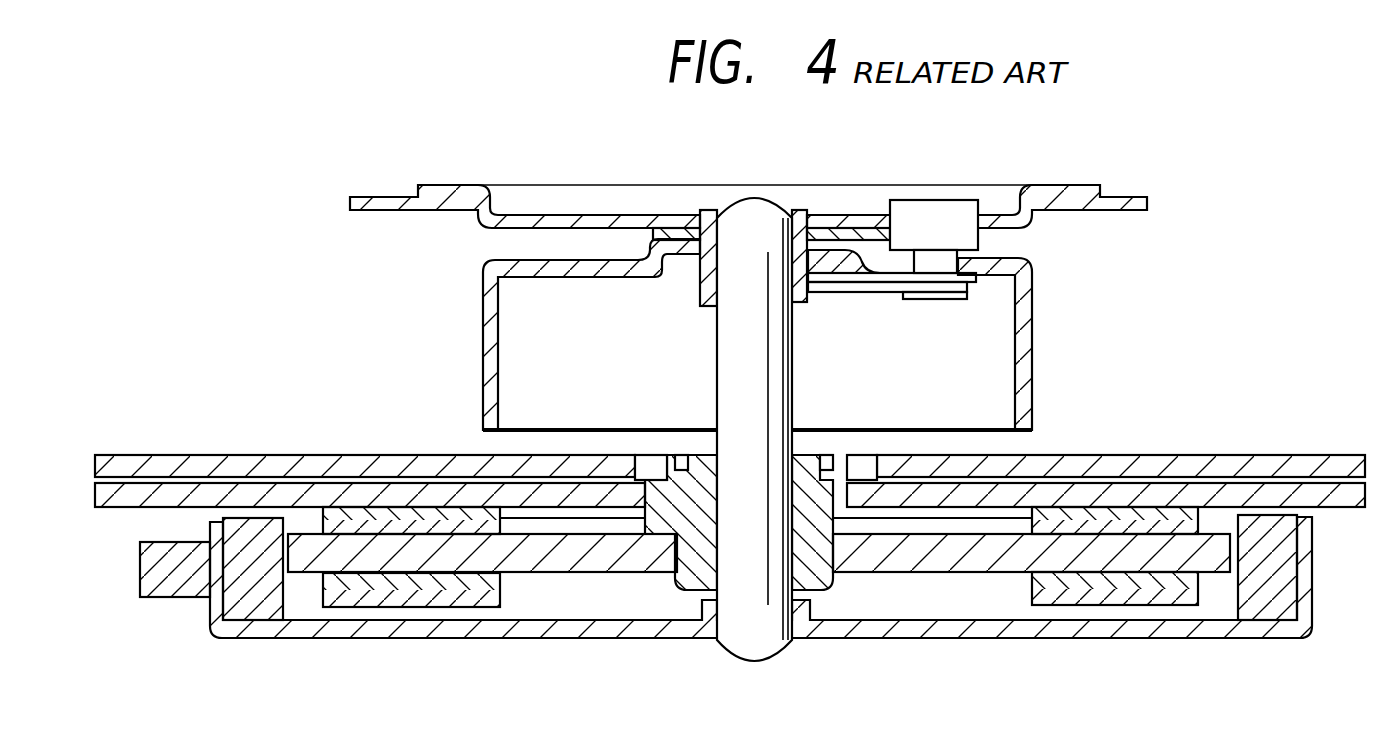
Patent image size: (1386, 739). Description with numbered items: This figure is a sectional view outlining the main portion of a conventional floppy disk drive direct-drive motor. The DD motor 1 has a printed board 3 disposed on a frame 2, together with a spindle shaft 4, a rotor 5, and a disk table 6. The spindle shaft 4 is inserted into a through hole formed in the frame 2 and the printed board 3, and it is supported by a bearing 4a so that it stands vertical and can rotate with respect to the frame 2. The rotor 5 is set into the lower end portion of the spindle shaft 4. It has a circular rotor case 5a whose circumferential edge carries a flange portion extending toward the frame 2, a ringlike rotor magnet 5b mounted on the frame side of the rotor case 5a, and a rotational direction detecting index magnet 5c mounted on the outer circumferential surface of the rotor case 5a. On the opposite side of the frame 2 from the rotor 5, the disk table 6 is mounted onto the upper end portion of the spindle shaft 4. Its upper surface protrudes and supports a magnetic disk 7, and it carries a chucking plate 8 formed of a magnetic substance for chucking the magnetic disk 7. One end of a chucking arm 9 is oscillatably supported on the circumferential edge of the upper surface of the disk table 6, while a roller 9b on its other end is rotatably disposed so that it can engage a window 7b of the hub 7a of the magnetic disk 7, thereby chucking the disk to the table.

The DD motor 1 is at (298, 263).
The frame 2 is at (157, 456).
The printed board 3 is at (378, 483).
The spindle shaft 4 is at (793, 380).
The bearing 4a is at (703, 455).
The rotor 5 is at (580, 640).
The rotor case 5a is at (965, 640).
The rotor magnet 5b is at (257, 622).
The rotational direction detecting index magnet 5c is at (163, 598).
The disk table 6 is at (485, 333).
The magnetic disk 7 is at (1120, 196).
The hub 7a is at (548, 220).
The window 7b is at (870, 222).
The chucking plate 8 is at (667, 224).
The chucking arm 9 is at (828, 270).
The roller 9b is at (943, 206).